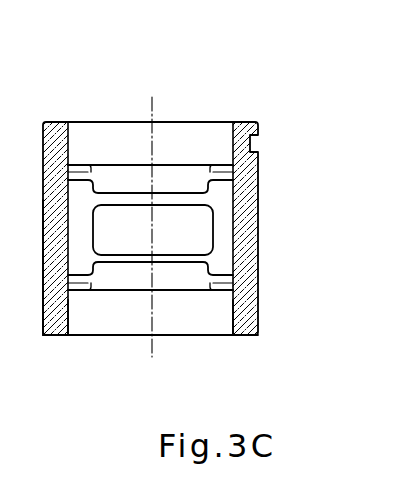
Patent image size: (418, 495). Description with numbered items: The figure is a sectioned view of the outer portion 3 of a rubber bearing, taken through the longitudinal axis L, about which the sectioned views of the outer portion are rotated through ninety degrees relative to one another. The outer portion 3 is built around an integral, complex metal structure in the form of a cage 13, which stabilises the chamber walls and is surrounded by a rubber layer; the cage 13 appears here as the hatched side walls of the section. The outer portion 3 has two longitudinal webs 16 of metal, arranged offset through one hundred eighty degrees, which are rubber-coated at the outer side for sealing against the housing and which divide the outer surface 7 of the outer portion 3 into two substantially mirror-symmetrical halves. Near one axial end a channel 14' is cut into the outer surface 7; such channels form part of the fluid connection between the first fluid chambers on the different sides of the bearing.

The outer portion 3 is at (72, 121).
The cage 13 is at (43, 167).
The channel 14' is at (254, 178).
The outer surface 7 is at (43, 272).
The longitudinal web 16 is at (58, 326).
The longitudinal axis L is at (151, 350).